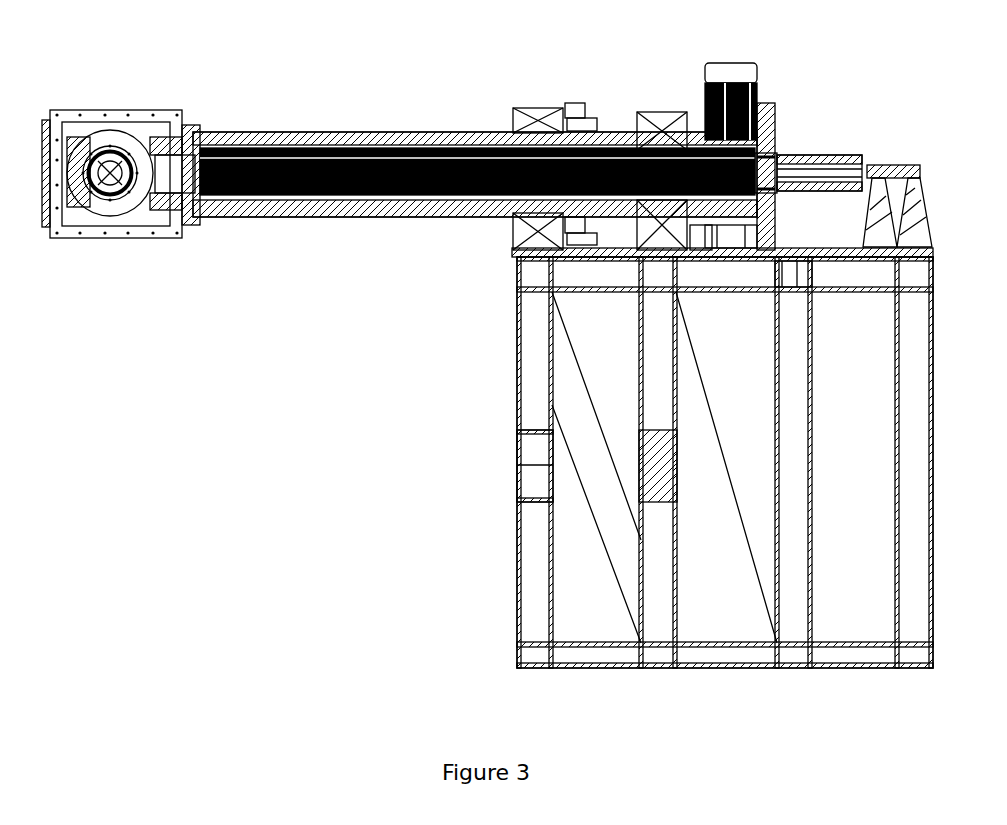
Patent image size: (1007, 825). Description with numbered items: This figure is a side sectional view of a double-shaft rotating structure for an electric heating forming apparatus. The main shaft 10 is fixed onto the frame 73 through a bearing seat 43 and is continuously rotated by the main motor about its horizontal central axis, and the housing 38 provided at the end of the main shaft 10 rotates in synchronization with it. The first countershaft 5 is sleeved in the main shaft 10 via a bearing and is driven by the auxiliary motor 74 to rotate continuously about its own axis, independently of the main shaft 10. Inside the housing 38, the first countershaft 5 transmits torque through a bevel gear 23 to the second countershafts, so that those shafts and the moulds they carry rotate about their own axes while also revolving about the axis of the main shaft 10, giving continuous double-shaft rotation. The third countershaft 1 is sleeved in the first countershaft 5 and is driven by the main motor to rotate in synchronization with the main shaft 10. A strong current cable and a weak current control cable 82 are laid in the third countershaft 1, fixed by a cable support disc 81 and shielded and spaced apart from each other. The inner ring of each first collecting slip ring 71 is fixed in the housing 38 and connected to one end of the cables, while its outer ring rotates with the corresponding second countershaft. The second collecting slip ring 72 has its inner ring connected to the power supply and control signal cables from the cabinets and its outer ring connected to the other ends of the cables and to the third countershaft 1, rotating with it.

The third countershaft 1 is at (788, 197).
The first countershaft 5 is at (606, 150).
The main shaft 10 is at (492, 130).
The bevel gear 23 is at (158, 212).
The housing 38 is at (165, 120).
The bearing seat 43 is at (540, 230).
The first collecting slip ring 71 is at (122, 138).
The second collecting slip ring 72 is at (812, 155).
The frame 73 is at (795, 318).
The auxiliary motor 74 is at (733, 63).
The cable support disc 81 is at (300, 212).
The weak current control cable 82 is at (316, 135).